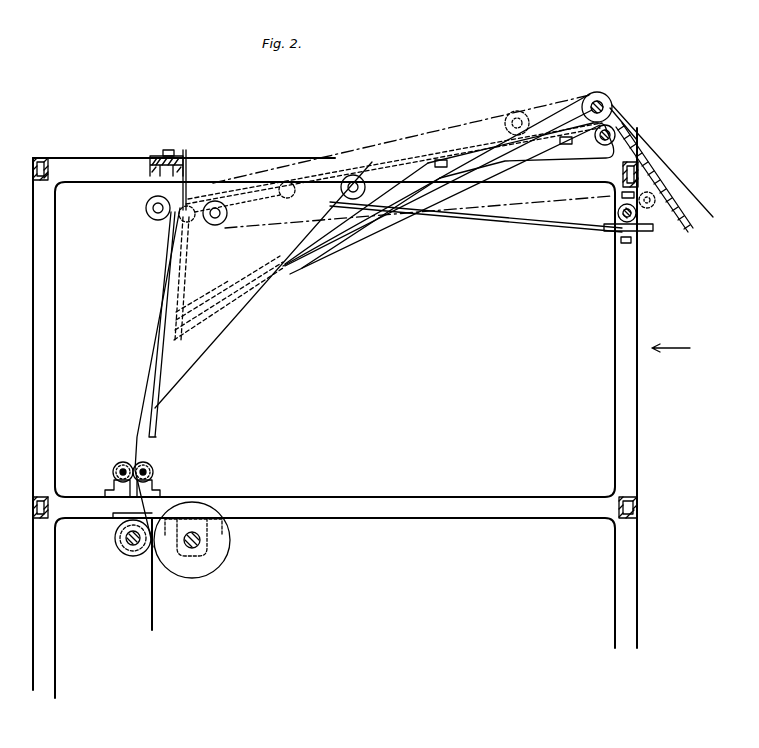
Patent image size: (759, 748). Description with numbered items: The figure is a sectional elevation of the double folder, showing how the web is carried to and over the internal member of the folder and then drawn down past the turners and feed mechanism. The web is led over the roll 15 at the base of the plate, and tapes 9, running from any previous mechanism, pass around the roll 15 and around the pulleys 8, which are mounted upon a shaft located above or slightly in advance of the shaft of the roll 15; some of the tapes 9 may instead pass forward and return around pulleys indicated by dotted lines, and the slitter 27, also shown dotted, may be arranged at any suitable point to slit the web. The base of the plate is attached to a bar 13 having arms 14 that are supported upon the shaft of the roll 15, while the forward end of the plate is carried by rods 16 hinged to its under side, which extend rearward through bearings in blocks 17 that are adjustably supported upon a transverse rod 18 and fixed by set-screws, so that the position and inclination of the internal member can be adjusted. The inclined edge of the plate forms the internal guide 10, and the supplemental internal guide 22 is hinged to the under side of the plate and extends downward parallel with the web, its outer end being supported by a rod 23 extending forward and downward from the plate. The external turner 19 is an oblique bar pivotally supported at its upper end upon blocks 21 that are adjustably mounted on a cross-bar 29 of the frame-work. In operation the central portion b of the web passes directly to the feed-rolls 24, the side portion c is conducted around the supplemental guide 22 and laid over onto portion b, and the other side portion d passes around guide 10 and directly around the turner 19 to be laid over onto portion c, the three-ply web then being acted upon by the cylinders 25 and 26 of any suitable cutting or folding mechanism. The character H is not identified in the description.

The pulleys 8 is at (146, 210).
The tapes 9 is at (442, 128).
The internal guide 10 is at (370, 170).
The bar 13 is at (564, 142).
The arms 14 is at (601, 143).
The roll 15 is at (620, 122).
The rods 16 is at (513, 217).
The bearing-blocks 17 is at (615, 231).
The transverse rod 18 is at (617, 213).
The external turner 19 is at (165, 348).
The blocks 21 is at (186, 160).
The supplemental internal guide 22 is at (180, 285).
The rod 23 is at (323, 233).
The feed-rolls 24 is at (118, 462).
The cylinder 25 is at (135, 553).
The cylinder 26 is at (192, 540).
The slitter 27 is at (531, 124).
The cross-bar 29 is at (152, 158).
The central portion of the web b is at (134, 448).
The side portion of the web c is at (368, 218).
The side portion of the web d is at (213, 279).
The frame H is at (549, 136).